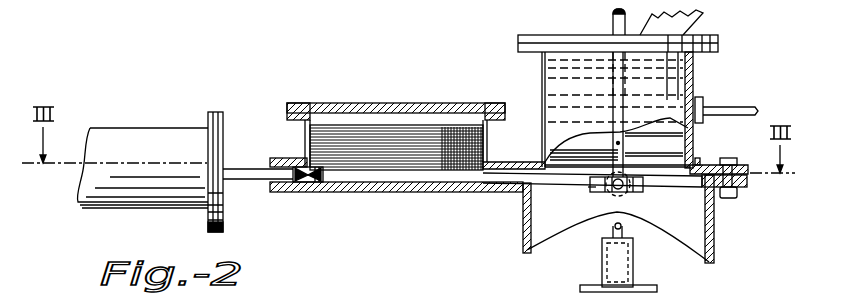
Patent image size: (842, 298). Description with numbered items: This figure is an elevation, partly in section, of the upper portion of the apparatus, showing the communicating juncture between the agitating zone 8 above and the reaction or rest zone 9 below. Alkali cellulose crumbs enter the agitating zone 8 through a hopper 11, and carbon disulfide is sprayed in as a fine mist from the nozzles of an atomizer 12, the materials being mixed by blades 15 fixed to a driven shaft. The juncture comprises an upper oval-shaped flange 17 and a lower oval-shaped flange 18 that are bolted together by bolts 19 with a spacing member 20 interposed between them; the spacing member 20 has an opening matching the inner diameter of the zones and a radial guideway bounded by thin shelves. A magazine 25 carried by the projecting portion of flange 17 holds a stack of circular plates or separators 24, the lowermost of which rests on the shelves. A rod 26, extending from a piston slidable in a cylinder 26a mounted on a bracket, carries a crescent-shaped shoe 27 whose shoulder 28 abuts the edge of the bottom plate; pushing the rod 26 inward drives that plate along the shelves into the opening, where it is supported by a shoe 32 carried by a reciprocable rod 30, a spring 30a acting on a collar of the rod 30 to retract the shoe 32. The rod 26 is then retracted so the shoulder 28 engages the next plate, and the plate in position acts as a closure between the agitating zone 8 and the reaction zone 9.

The agitating zone 8 is at (698, 78).
The reaction or rest zone 9 is at (716, 232).
The hopper 11 is at (700, 20).
The atomizer 12 is at (705, 100).
The blades 15 is at (595, 60).
The oval-shaped flange 17 is at (497, 161).
The oval-shaped flange 18 is at (440, 190).
The bolts 19 is at (722, 160).
The spacing member 20 is at (748, 189).
The circular plates or separators 24 is at (338, 132).
The magazine 25 is at (307, 104).
The rod 26 is at (248, 181).
The cylinder 26a is at (172, 142).
The crescent-shaped shoe 27 is at (306, 183).
The shoulder 28 is at (318, 170).
The reciprocable rod 30 is at (645, 193).
The spring 30a is at (634, 271).
The shoe 32 is at (590, 189).